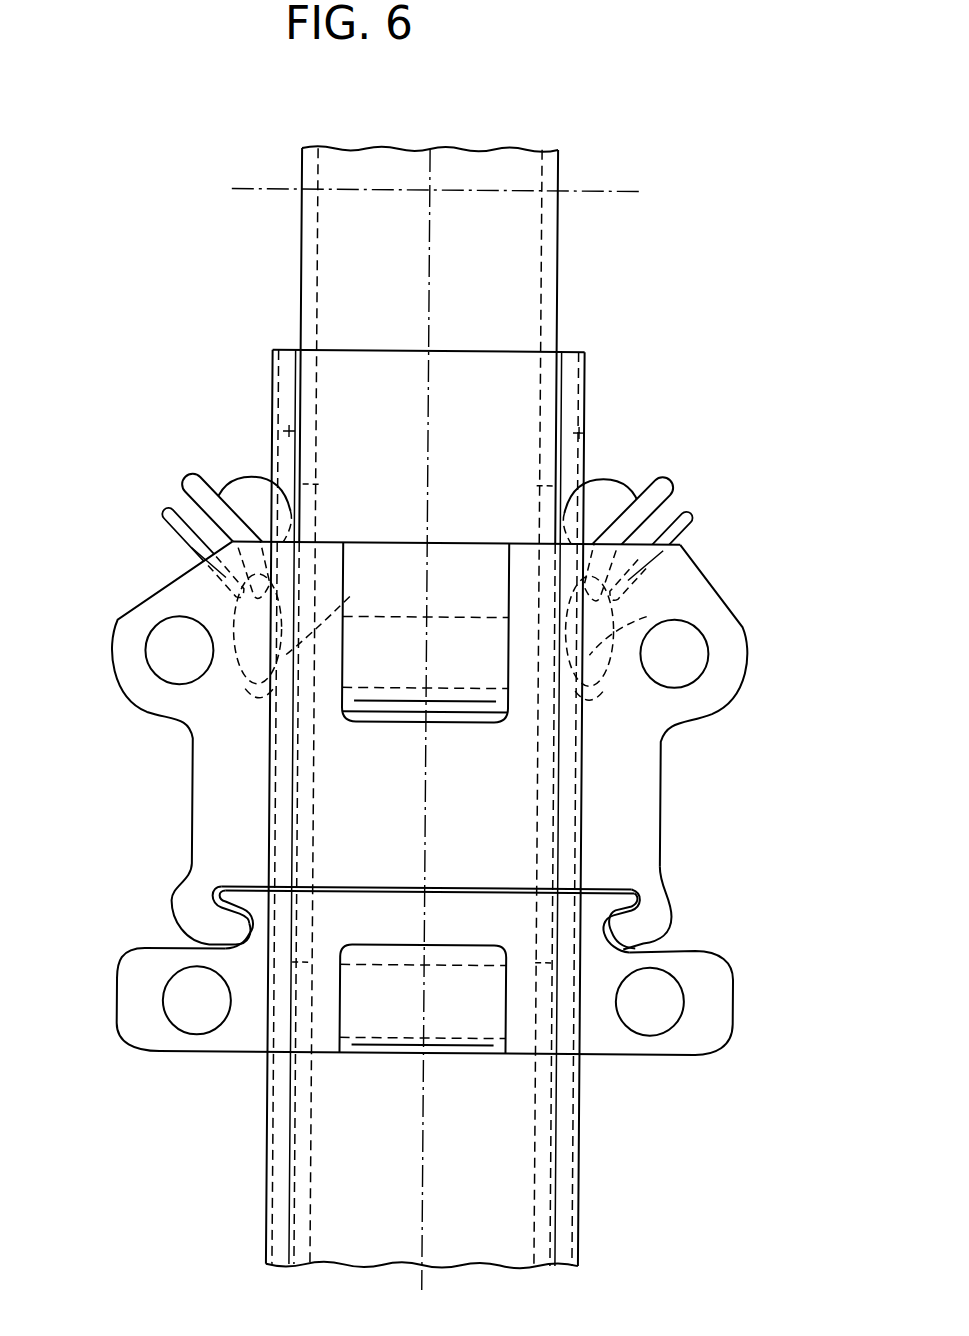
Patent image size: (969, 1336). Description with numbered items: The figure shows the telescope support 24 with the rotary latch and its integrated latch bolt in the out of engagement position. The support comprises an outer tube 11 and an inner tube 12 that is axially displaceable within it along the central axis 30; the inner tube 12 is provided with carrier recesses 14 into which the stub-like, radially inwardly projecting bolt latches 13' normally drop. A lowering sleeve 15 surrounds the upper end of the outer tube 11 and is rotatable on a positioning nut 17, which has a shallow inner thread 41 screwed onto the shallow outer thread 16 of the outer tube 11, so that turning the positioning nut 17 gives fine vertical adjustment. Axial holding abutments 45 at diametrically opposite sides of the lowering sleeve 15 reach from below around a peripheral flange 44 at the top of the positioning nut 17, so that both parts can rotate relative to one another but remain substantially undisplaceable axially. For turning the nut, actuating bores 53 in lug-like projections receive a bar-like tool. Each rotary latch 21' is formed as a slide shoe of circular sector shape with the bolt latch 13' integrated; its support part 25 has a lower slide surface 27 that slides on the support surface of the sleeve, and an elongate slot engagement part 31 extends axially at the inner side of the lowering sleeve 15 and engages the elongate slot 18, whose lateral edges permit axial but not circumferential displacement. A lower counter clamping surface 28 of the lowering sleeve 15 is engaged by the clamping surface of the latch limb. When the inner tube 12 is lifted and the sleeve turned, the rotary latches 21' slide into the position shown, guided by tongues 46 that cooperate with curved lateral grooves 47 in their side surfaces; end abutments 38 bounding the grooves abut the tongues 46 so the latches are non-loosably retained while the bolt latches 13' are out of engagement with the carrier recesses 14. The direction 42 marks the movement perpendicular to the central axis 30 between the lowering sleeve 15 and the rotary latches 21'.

The outer tube 11 is at (522, 1133).
The inner tube 12 is at (524, 294).
The bolt latch 13' is at (430, 474).
The carrier recess 14 is at (312, 485).
The lowering sleeve 15 is at (647, 797).
The outer thread 16 is at (578, 1100).
The positioning nut 17 is at (248, 1035).
The elongate slot 18 is at (290, 425).
The rotary latch 21' is at (429, 516).
The telescope support 24 is at (403, 828).
The support part 25 is at (270, 698).
The lower slide surface 27 is at (352, 598).
The lower counter clamping surface 28 is at (168, 520).
The central axis 30 is at (430, 272).
The elongate slot engagement part 31 is at (197, 484).
The end abutment 38 is at (265, 655).
The inner thread 41 is at (574, 907).
The direction perpendicular to the central axis 42 is at (597, 190).
The peripheral flange 44 is at (640, 892).
The axial holding abutment 45 is at (620, 930).
The tongue 46 is at (222, 580).
The lateral groove 47 is at (192, 552).
The actuating bore 53 is at (414, 622).